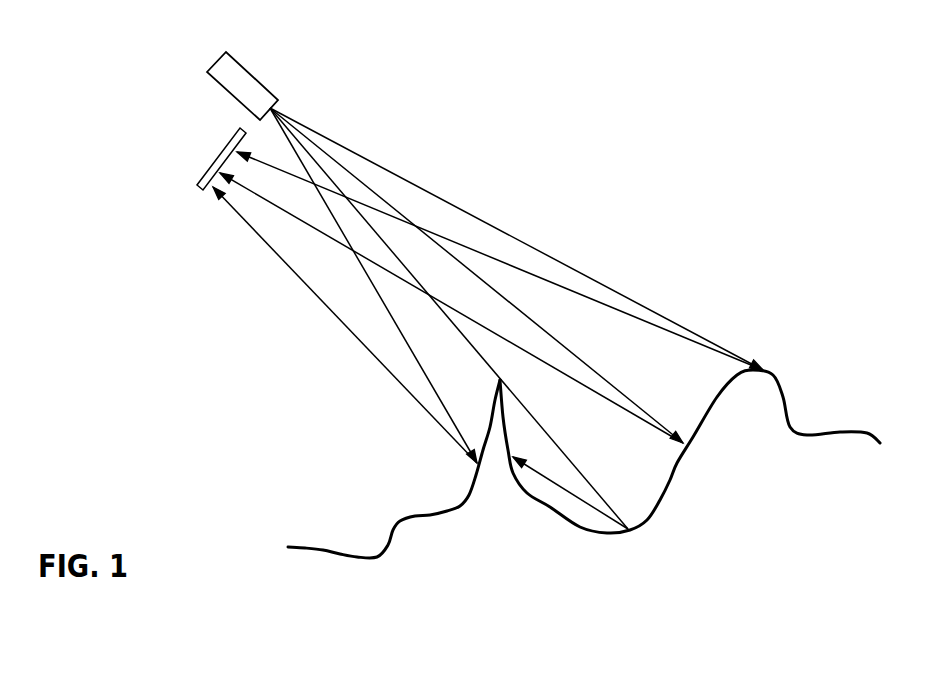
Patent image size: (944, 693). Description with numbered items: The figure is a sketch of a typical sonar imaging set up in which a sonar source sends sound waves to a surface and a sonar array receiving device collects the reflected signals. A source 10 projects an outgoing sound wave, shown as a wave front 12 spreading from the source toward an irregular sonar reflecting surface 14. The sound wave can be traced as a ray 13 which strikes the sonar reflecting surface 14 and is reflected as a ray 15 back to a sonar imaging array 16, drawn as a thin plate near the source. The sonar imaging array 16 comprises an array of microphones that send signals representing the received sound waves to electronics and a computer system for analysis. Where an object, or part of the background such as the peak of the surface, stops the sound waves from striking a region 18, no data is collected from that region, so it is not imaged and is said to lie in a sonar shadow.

The source 10 is at (240, 52).
The wave front 12 is at (302, 190).
The ray 13 is at (650, 417).
The sonar reflecting surface 14 is at (693, 458).
The reflected ray 15 is at (307, 223).
The sonar imaging array 16 is at (213, 167).
The region 18 is at (545, 505).